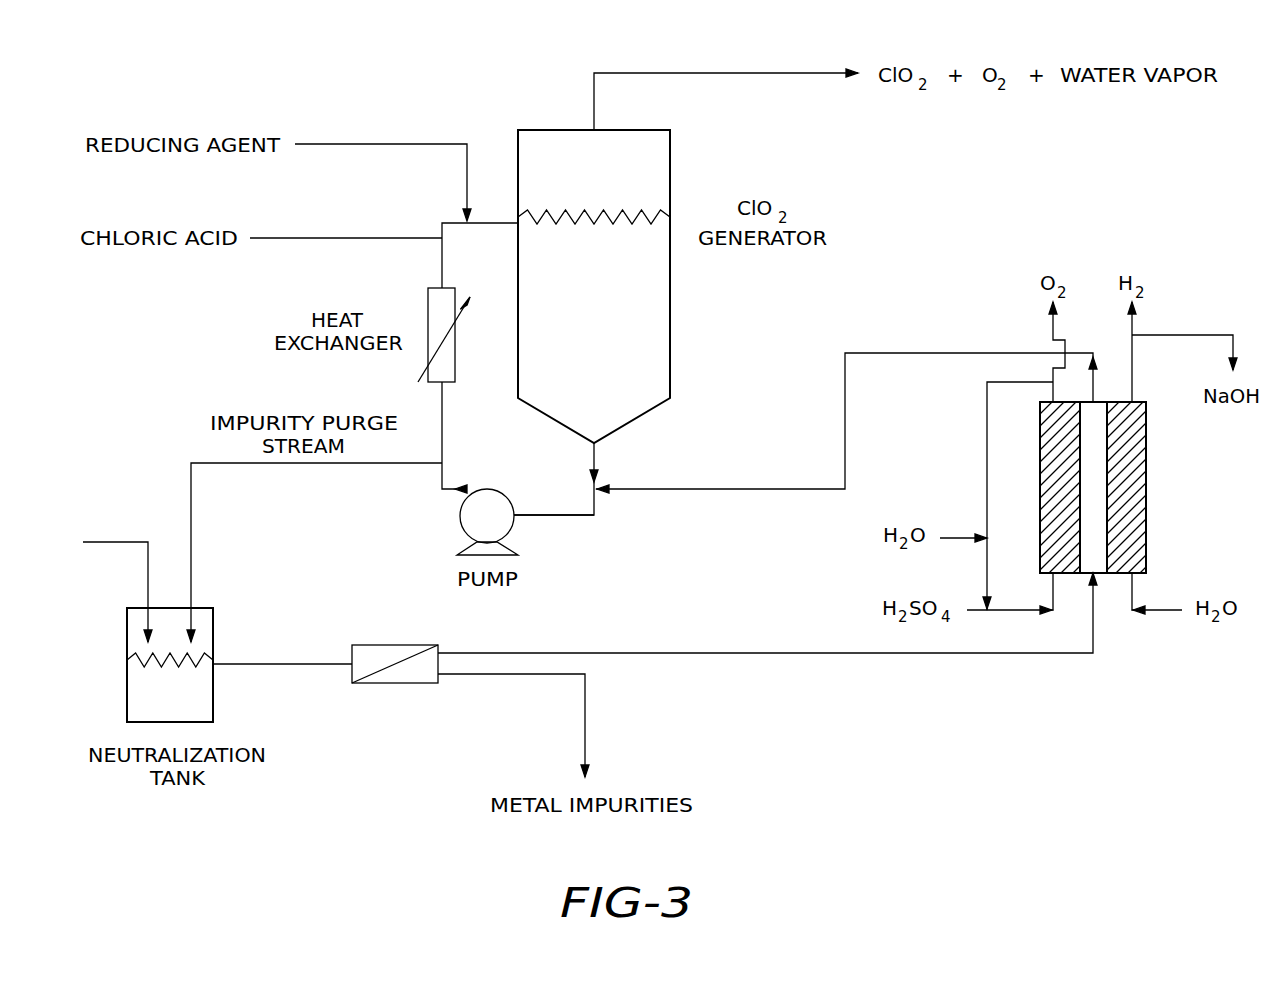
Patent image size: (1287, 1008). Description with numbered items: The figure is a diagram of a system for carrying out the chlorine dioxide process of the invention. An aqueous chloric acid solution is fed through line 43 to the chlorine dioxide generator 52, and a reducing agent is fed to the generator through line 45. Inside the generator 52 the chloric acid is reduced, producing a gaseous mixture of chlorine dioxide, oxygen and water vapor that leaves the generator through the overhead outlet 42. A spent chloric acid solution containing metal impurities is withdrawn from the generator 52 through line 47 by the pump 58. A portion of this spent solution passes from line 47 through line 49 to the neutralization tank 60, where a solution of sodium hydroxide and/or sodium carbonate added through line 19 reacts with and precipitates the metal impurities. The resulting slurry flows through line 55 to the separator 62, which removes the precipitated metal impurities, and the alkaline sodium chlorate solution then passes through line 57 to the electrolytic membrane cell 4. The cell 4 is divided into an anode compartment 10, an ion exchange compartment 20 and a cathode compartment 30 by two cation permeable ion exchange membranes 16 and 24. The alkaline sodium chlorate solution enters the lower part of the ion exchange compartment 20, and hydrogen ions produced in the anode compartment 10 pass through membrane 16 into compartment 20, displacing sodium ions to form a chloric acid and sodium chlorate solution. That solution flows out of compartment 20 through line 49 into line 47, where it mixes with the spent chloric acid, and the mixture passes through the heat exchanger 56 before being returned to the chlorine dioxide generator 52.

The electrolytic membrane cell 4 is at (1114, 437).
The anode compartment 10 is at (1056, 487).
The cation permeable ion exchange membrane 16 is at (1080, 402).
The ion exchange compartment 20 is at (1097, 458).
The cation permeable ion exchange membrane 24 is at (1106, 402).
The cathode compartment 30 is at (1137, 480).
The line 19 is at (99, 586).
The chlorine dioxide product outlet line 42 is at (716, 73).
The line 43 is at (352, 238).
The line 45 is at (467, 170).
The line 47 is at (547, 515).
The line 49 is at (355, 464).
The chlorine dioxide generator 52 is at (670, 338).
The line 55 is at (300, 664).
The heat exchanger 56 is at (428, 372).
The line 57 is at (738, 652).
The pump 58 is at (462, 510).
The neutralization tank 60 is at (127, 690).
The separator 62 is at (390, 683).